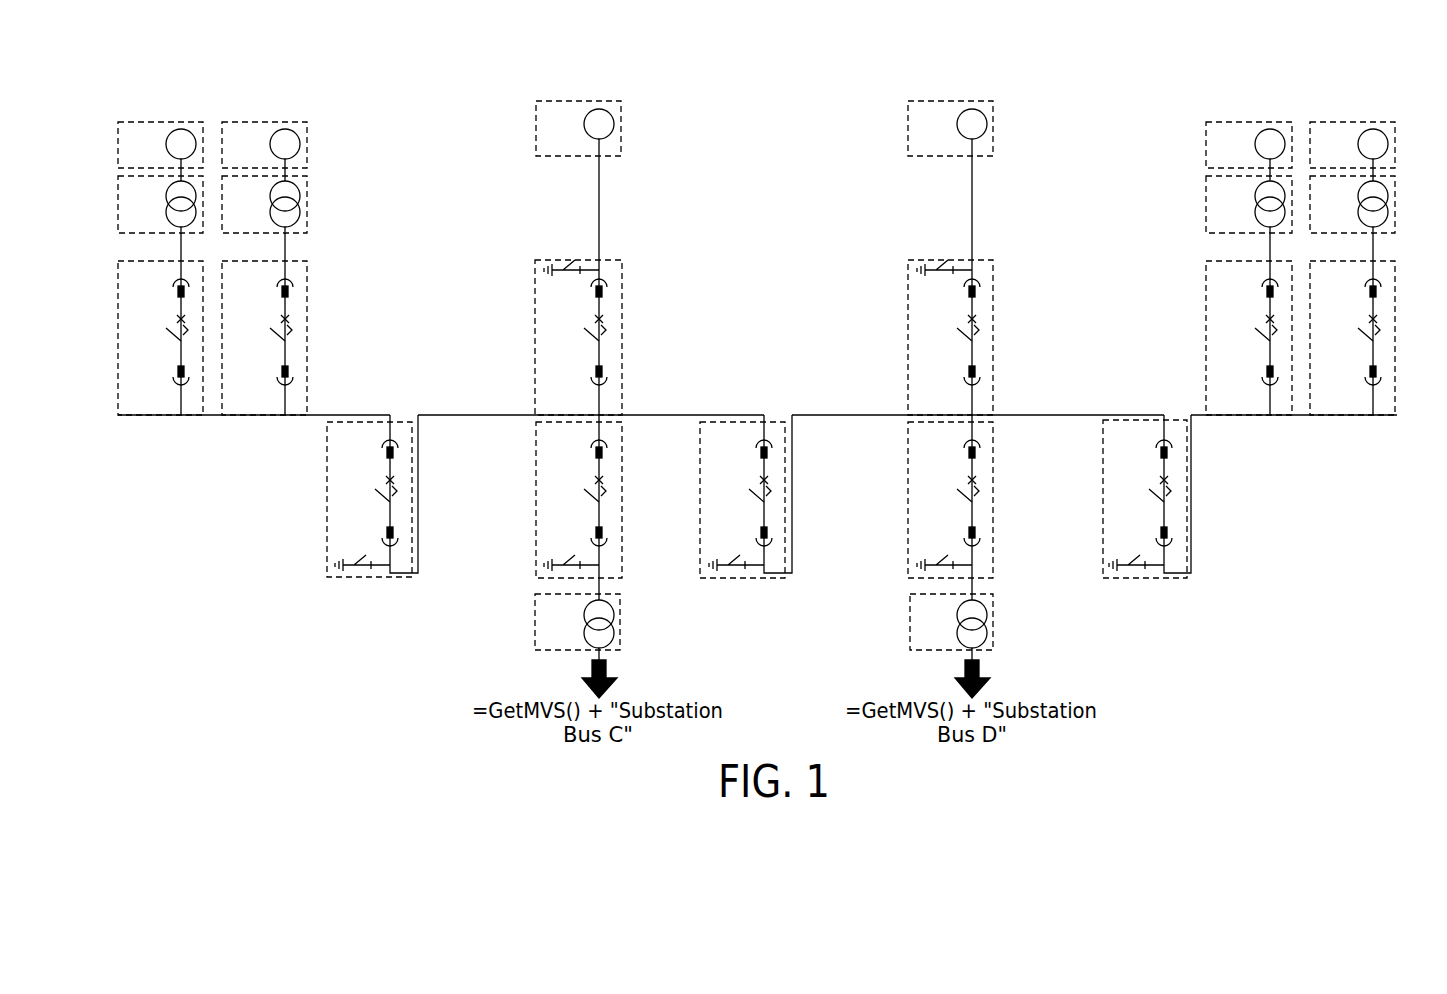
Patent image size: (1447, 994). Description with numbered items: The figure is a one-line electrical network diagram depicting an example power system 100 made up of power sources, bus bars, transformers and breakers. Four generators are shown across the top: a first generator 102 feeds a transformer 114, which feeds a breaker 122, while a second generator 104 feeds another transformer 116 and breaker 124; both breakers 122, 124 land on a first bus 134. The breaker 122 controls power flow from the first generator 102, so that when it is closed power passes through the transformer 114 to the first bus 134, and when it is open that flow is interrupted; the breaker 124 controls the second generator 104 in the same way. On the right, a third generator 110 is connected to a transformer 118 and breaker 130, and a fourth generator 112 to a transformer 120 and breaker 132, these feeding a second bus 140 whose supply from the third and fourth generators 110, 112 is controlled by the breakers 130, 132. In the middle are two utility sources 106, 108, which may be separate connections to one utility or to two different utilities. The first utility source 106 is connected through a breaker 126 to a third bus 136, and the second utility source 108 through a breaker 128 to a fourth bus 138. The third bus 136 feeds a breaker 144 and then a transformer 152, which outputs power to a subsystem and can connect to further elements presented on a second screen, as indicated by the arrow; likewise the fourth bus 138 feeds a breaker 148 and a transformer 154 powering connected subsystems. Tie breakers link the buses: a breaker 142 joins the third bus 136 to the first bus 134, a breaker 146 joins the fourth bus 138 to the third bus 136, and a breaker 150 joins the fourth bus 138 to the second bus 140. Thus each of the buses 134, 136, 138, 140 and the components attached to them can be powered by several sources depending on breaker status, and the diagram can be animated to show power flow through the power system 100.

The power system 100 is at (314, 687).
The first generator 102 is at (150, 122).
The second generator 104 is at (253, 122).
The first utility source 106 is at (568, 101).
The second utility source 108 is at (938, 101).
The third generator 110 is at (1237, 122).
The fourth generator 112 is at (1340, 122).
The transformer 114 is at (118, 204).
The transformer 116 is at (307, 207).
The transformer 118 is at (1206, 198).
The transformer 120 is at (1395, 203).
The breaker 122 is at (118, 327).
The breaker 124 is at (307, 327).
The breaker 126 is at (535, 302).
The breaker 128 is at (908, 302).
The breaker 130 is at (1206, 302).
The breaker 132 is at (1395, 327).
The first bus 134 is at (352, 415).
The third bus 136 is at (675, 415).
The fourth bus 138 is at (818, 415).
The second bus 140 is at (1345, 418).
The breaker 142 is at (357, 580).
The breaker 144 is at (535, 565).
The breaker 146 is at (735, 580).
The breaker 148 is at (908, 553).
The breaker 150 is at (1132, 580).
The transformer 152 is at (535, 622).
The transformer 154 is at (910, 638).